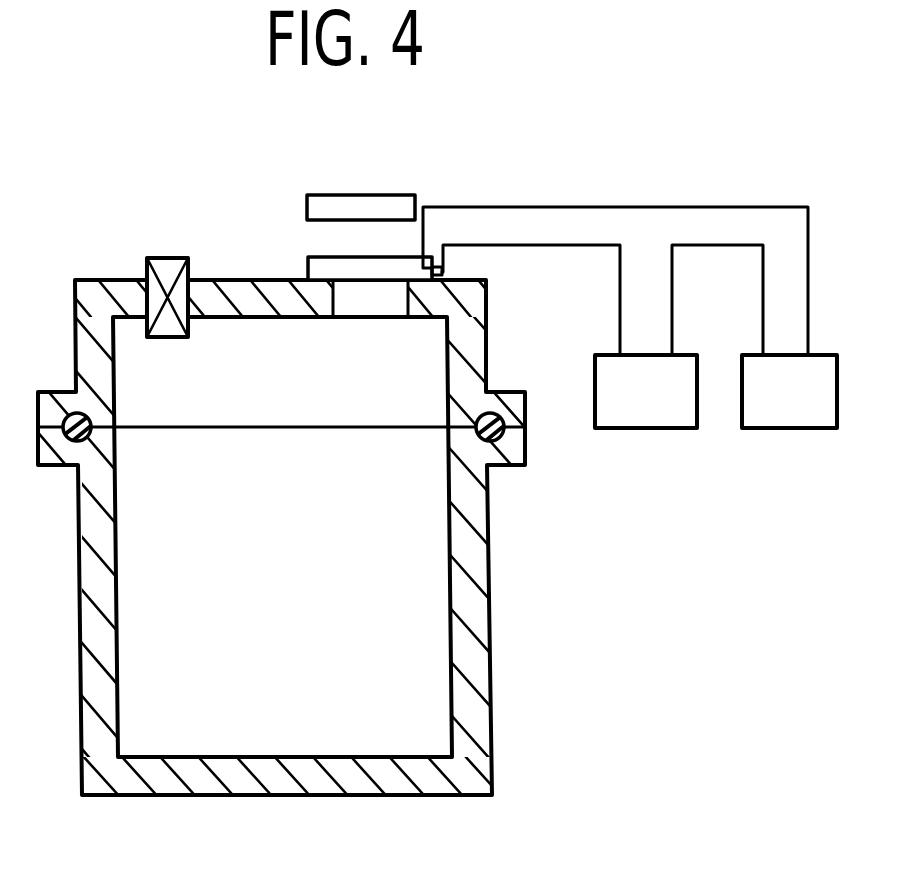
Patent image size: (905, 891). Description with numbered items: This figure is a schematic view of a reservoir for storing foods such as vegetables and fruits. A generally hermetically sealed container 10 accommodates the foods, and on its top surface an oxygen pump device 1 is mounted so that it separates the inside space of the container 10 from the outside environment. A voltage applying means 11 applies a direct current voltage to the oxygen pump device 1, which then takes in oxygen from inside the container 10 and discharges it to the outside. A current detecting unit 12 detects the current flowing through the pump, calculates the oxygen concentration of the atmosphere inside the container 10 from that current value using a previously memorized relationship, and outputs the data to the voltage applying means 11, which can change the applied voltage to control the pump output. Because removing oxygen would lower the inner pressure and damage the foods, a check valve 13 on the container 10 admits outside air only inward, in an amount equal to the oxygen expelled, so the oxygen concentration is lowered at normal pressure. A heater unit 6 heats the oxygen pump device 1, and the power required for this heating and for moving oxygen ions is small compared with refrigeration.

The oxygen pump device 1 is at (311, 258).
The heater unit 6 is at (320, 192).
The container 10 is at (490, 652).
The voltage applying means 11 is at (631, 428).
The current detecting unit 12 is at (770, 428).
The check valve 13 is at (145, 262).